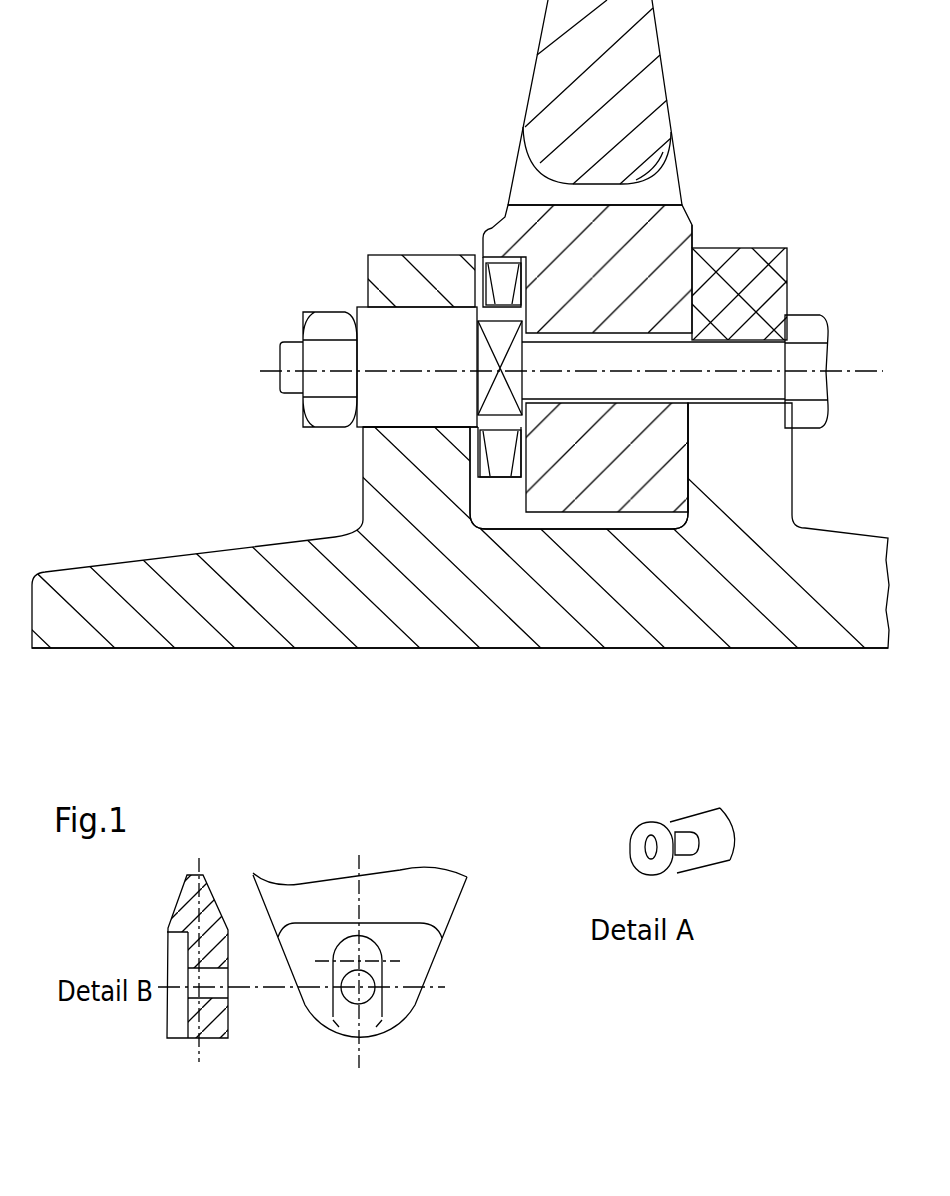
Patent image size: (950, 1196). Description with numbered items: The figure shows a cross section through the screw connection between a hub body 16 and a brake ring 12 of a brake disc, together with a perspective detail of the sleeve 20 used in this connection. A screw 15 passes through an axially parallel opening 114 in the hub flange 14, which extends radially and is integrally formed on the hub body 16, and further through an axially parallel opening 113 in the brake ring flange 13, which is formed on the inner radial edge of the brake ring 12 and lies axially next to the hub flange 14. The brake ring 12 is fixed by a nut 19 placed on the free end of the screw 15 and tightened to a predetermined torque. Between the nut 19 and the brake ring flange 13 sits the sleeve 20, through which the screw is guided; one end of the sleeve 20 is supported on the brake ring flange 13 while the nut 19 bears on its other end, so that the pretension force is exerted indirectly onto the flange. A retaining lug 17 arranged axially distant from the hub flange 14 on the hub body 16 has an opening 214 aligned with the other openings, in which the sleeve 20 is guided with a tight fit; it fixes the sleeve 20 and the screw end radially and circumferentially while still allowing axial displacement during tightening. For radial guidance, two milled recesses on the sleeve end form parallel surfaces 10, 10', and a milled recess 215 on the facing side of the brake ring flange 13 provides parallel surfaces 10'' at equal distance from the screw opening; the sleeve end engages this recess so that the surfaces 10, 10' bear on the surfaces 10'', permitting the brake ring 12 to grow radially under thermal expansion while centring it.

The parallel surface 10 is at (553, 506).
The parallel surface 10' is at (639, 809).
The parallel surfaces of milled recess 10'' is at (313, 668).
The brake ring 12 is at (653, 187).
The brake ring flange 13 is at (692, 225).
The hub flange 14 is at (773, 264).
The screw 15 is at (828, 325).
The hub body 16 is at (412, 608).
The retaining lug 17 is at (387, 508).
The nut 19 is at (325, 328).
The sleeve 20 is at (374, 327).
The axially parallel opening in brake ring flange 113 is at (757, 247).
The axially parallel opening in hub flange 114 is at (775, 330).
The opening of retaining lug 214 is at (420, 423).
The milled recess 215 is at (368, 1033).